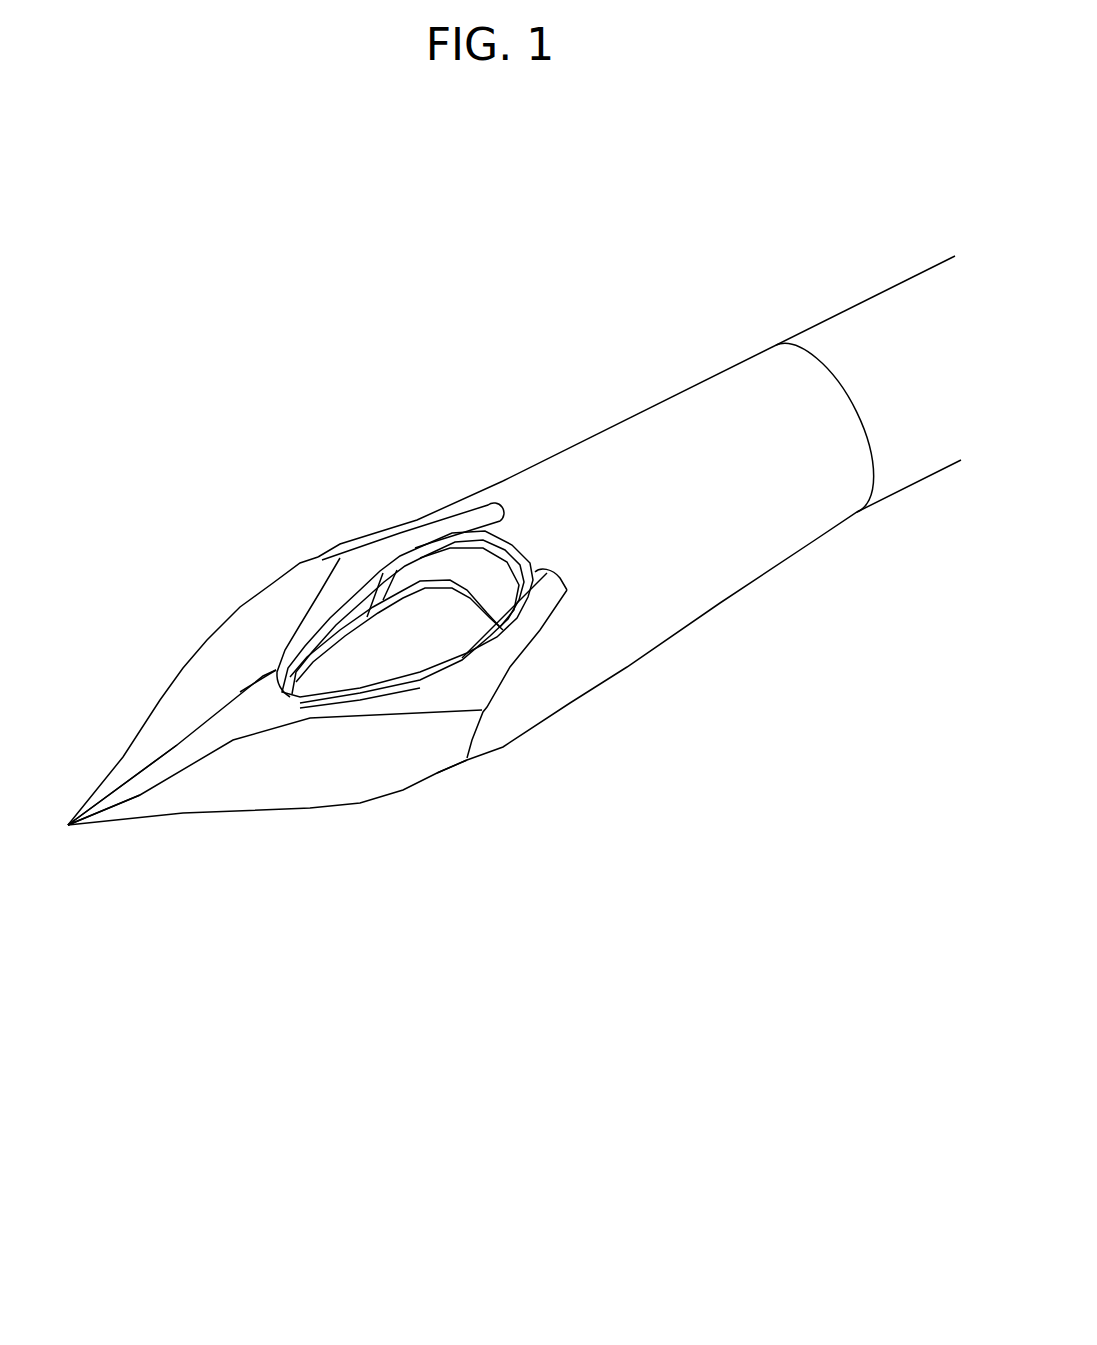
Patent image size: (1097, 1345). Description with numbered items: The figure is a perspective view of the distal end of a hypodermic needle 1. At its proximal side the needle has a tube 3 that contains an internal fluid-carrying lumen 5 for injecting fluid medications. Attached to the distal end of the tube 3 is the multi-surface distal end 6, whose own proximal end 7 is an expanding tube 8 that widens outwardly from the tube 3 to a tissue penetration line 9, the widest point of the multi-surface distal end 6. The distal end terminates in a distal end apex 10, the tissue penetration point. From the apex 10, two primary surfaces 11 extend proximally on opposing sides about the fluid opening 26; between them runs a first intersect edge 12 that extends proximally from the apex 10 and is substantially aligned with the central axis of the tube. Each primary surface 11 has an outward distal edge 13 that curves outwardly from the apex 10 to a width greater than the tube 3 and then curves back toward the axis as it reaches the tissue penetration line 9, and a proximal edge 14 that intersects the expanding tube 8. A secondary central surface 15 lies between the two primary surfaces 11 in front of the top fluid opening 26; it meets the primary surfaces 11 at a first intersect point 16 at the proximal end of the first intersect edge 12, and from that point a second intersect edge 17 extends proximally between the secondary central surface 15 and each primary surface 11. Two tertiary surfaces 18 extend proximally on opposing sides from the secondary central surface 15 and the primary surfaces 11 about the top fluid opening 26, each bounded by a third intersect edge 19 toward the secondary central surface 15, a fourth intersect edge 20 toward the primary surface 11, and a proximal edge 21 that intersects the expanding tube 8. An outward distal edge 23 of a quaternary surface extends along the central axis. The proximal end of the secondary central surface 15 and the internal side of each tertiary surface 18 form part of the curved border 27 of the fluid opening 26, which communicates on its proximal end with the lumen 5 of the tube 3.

The hypodermic needle 1 is at (527, 995).
The tube 3 is at (857, 329).
The internal fluid-carrying lumen 5 is at (450, 570).
The multi-surface distal end 6 is at (597, 455).
The proximal end 7 is at (857, 510).
The expanding tube 8 is at (712, 513).
The tissue penetration line 9 is at (478, 765).
The distal end apex 10 is at (68, 835).
The primary surfaces 11 is at (127, 767).
The first intersect edge 12 is at (102, 798).
The outward distal edges 13 is at (183, 668).
The proximal edges 14 is at (321, 556).
The secondary central surface 15 is at (200, 740).
The first intersect point 16 is at (140, 785).
The second intersect edge 17 is at (175, 748).
The tertiary surfaces 18 is at (364, 577).
The third intersect edge 19 is at (263, 677).
The fourth intersect edge 20 is at (277, 643).
The proximal edges 21 is at (481, 508).
The outward distal edges 23 is at (441, 773).
The fluid opening 26 is at (410, 632).
The curved border 27 is at (517, 542).